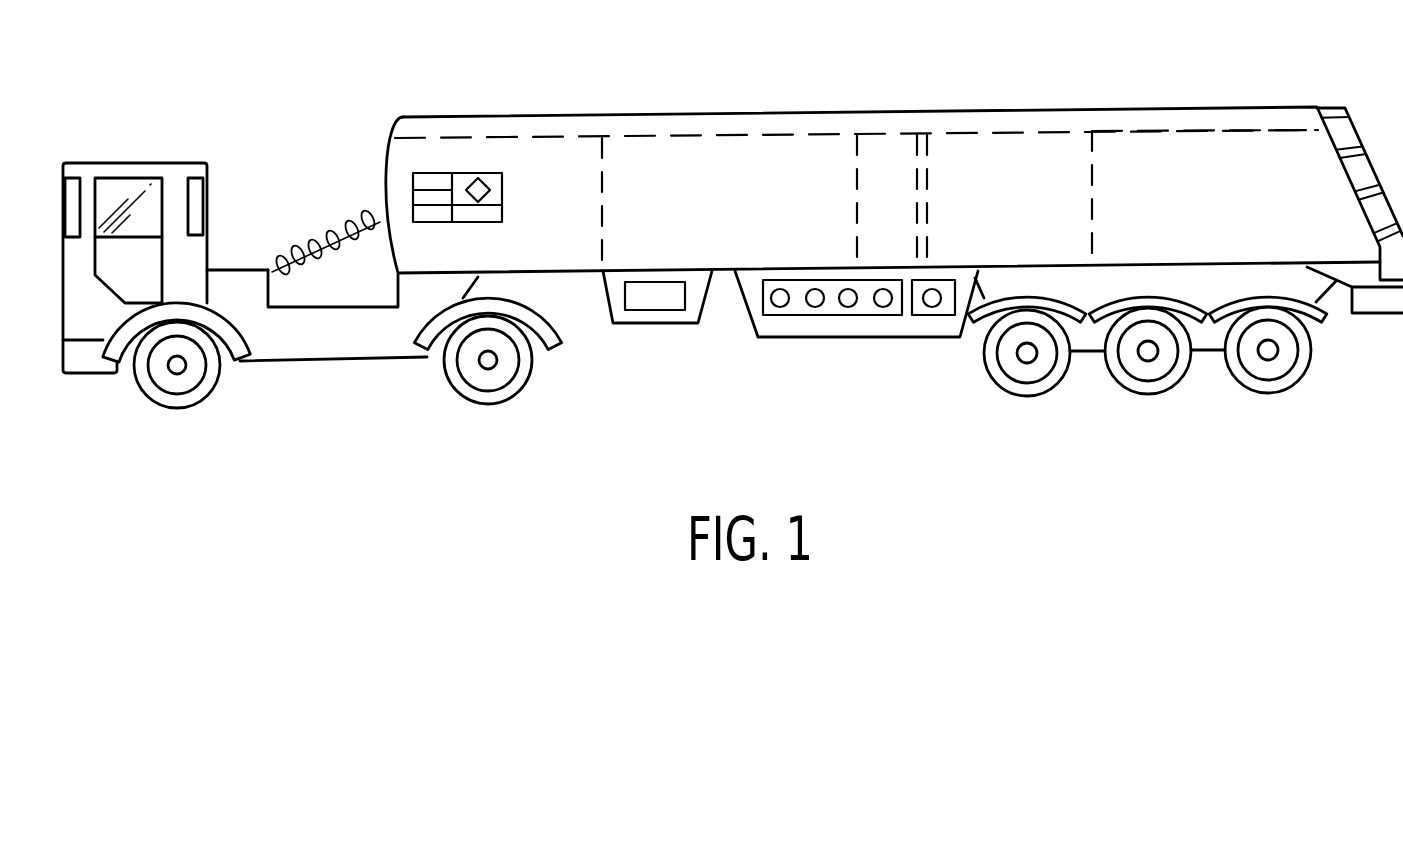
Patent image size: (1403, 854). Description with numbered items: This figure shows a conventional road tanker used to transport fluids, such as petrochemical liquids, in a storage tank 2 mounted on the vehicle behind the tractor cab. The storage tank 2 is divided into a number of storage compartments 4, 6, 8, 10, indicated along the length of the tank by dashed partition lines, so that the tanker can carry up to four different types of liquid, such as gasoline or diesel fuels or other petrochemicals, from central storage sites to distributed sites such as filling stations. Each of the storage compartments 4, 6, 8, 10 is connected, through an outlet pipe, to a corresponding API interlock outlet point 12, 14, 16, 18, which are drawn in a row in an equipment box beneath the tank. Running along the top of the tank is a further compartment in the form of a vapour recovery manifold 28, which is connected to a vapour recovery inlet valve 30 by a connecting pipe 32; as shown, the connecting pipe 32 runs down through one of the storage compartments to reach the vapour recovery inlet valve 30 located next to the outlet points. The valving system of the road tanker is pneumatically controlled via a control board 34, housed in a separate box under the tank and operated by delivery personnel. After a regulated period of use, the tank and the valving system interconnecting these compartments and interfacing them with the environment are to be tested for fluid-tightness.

The storage tank 2 is at (419, 115).
The storage compartment 4 is at (567, 173).
The storage compartment 6 is at (722, 155).
The storage compartment 8 is at (1007, 145).
The storage compartment 10 is at (1238, 145).
The vapour recovery manifold 28 is at (795, 130).
The connecting pipe 32 is at (925, 218).
The API interlock outlet point 12 is at (778, 306).
The API interlock outlet point 14 is at (810, 307).
The API interlock outlet point 16 is at (848, 307).
The API interlock outlet point 18 is at (882, 307).
The vapour recovery inlet valve 30 is at (930, 307).
The control board 34 is at (643, 302).